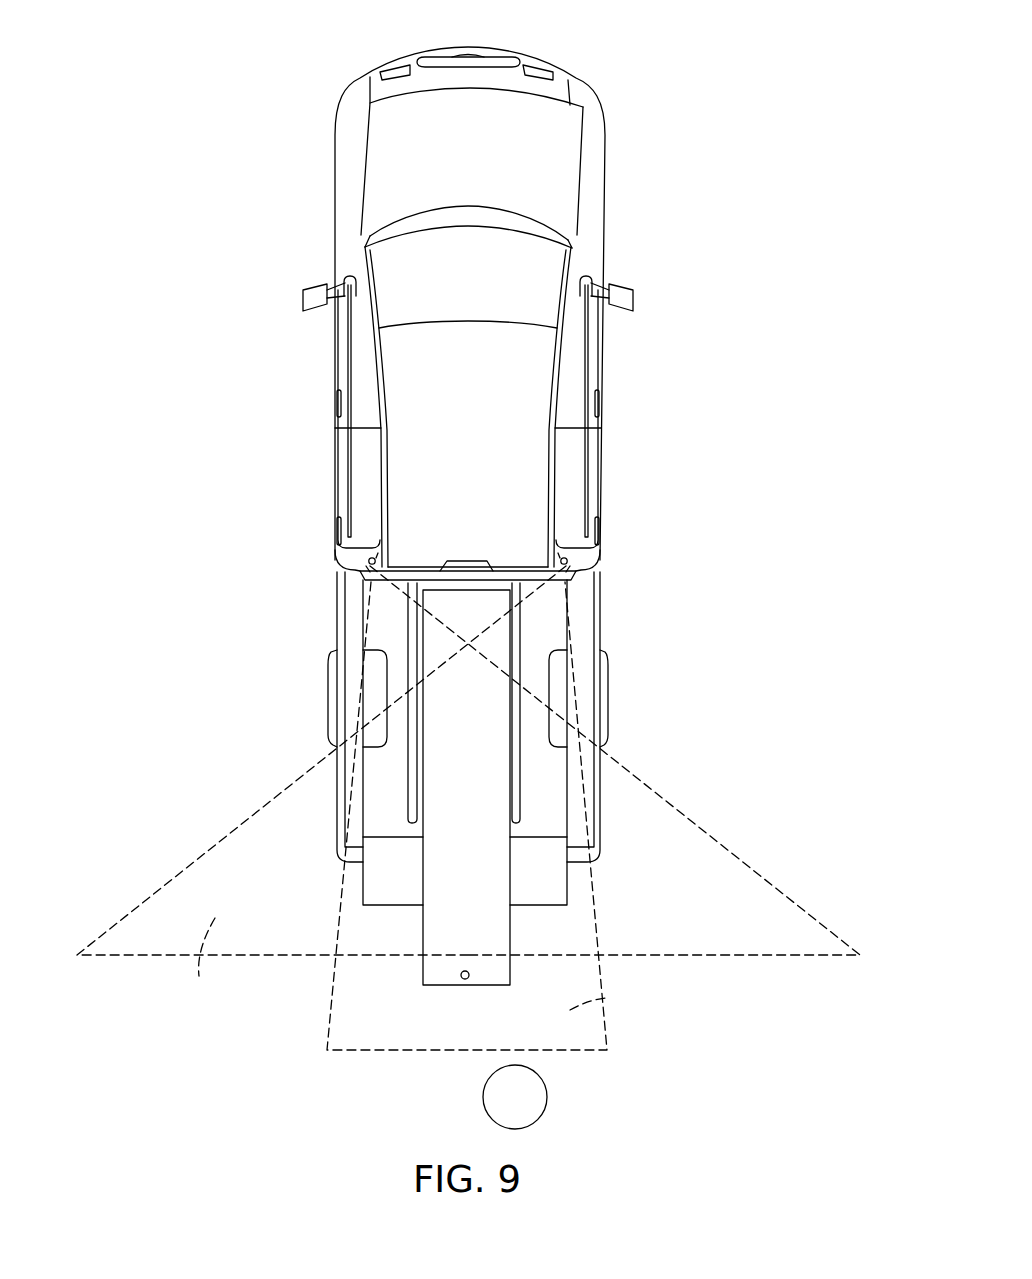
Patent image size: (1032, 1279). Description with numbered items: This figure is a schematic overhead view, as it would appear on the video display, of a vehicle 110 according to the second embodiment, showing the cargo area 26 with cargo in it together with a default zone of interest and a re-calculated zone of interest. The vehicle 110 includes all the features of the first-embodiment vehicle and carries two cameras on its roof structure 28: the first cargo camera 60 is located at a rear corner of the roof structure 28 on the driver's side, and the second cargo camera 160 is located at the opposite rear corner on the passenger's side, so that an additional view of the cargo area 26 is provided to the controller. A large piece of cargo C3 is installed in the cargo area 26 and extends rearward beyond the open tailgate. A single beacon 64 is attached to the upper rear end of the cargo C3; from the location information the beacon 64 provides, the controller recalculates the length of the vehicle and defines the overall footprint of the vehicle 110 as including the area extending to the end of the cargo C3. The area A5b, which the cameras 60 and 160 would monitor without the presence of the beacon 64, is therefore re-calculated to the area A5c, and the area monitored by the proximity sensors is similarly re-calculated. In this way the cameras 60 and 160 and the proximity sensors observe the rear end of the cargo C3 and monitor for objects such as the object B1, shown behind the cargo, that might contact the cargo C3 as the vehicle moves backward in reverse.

The vehicle 110 is at (427, 41).
The roof structure 28 is at (435, 390).
The first cargo camera 60 is at (377, 557).
The second cargo camera 160 is at (559, 557).
The cargo area 26 is at (388, 623).
The beacon 64 is at (462, 979).
The cargo C3 is at (455, 925).
The area monitored by the cameras A5b is at (321, 785).
The re-calculated area A5c is at (606, 998).
The object B1 is at (513, 1094).